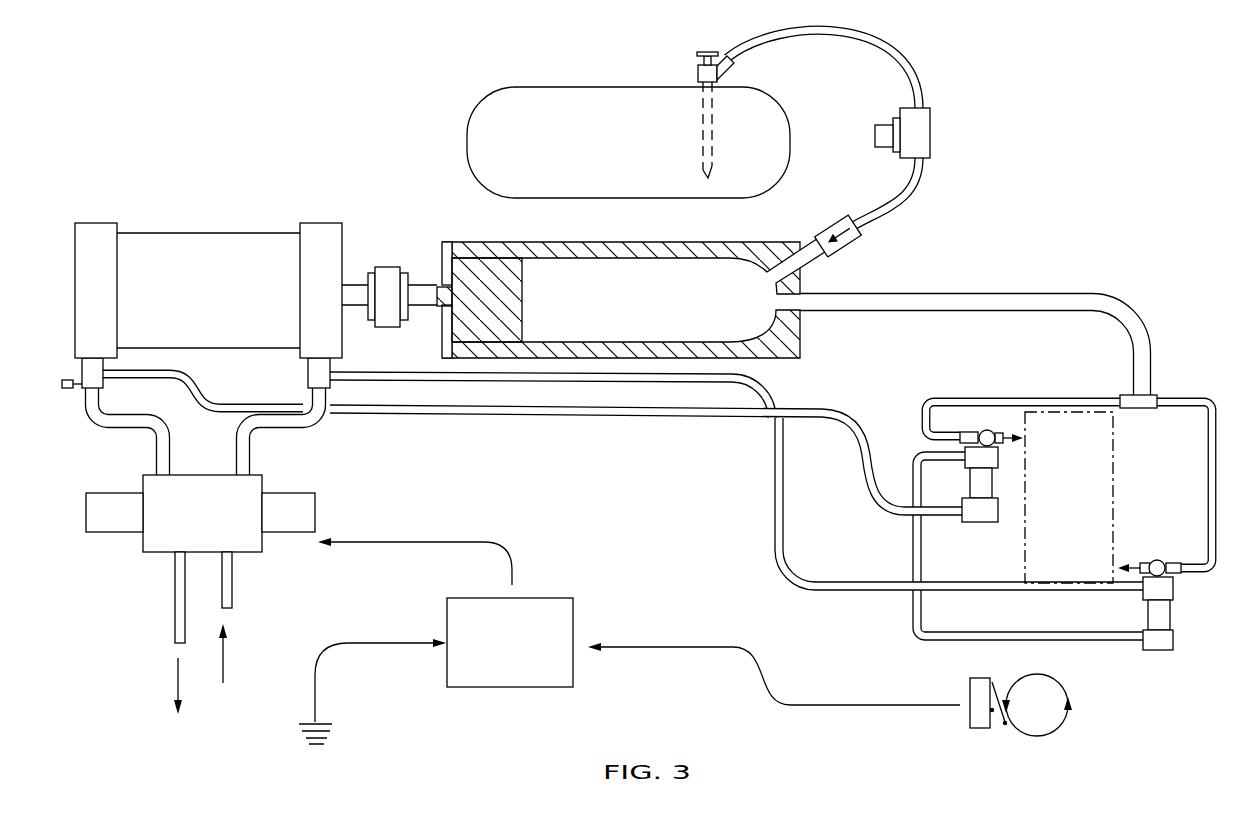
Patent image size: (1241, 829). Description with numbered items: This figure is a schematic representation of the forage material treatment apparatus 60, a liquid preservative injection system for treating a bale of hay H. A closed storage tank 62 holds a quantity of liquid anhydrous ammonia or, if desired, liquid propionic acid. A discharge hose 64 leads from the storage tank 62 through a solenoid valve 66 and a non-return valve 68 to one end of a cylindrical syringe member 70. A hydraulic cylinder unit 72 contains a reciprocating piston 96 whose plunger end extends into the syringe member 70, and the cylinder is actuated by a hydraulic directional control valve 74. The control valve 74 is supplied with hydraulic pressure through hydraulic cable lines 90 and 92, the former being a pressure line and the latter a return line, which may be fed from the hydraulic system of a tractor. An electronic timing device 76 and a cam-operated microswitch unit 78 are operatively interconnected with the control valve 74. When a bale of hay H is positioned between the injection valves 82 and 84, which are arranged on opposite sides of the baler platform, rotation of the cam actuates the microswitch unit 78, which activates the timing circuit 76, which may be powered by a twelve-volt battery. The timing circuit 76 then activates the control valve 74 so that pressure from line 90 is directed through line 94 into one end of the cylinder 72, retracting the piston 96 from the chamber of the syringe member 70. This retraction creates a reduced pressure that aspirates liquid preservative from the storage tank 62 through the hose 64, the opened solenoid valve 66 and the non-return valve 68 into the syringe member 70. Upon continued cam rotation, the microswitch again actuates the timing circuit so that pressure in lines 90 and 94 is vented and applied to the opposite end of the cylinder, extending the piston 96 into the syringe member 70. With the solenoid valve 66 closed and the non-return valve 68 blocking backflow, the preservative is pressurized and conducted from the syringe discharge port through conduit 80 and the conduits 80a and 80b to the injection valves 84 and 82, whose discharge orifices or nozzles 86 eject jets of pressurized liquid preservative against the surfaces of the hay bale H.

The forage material treatment apparatus 60 is at (366, 170).
The storage tank 62 is at (511, 87).
The discharge hose 64 is at (903, 54).
The solenoid valve 66 is at (930, 152).
The non-return valve 68 is at (862, 247).
The cylindrical syringe member 70 is at (451, 242).
The hydraulic cylinder unit 72 is at (200, 233).
The control valve 74 is at (152, 553).
The electronic timing device 76 is at (463, 688).
The cam-operated microswitch unit 78 is at (1057, 731).
The conduit 80 is at (1088, 293).
The conduit 80a is at (957, 397).
The conduit 80b is at (1217, 430).
The injection valve 82 is at (1174, 618).
The injection valve 84 is at (968, 480).
The discharge orifices or nozzles 86 is at (1003, 430).
The hydraulic cable line 90 is at (233, 586).
The hydraulic cable line 92 is at (175, 639).
The line 94 is at (293, 430).
The piston 96 is at (419, 283).
The hay bale H is at (1113, 442).